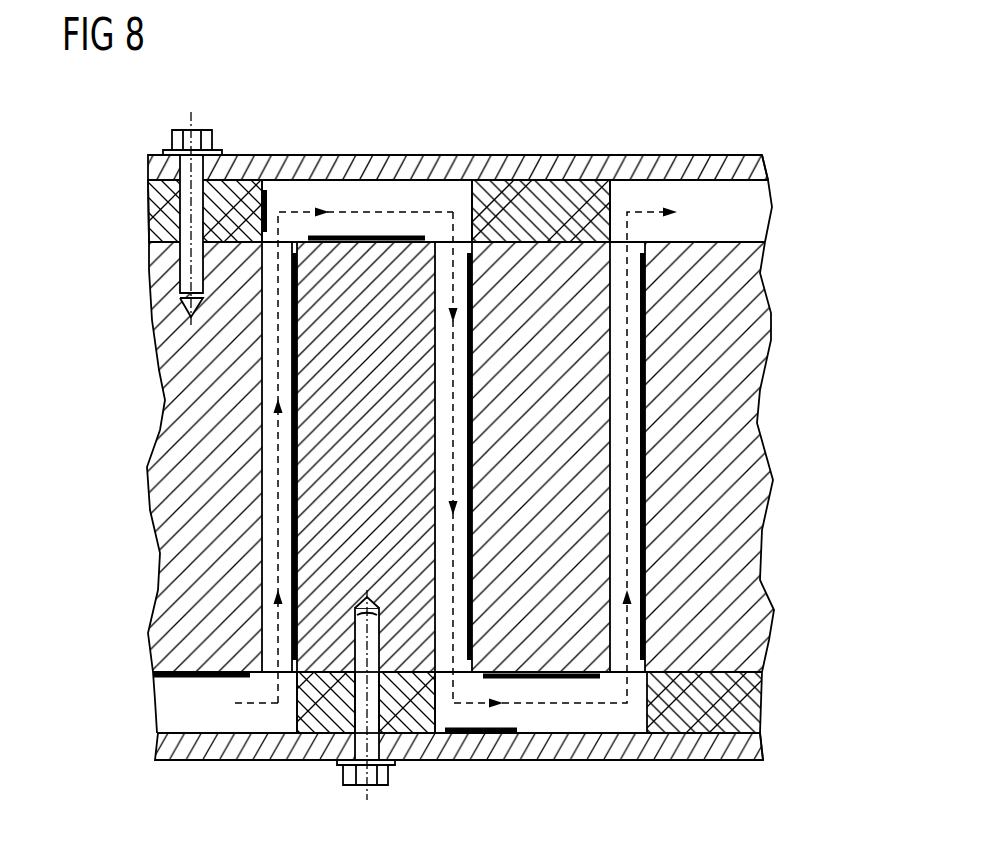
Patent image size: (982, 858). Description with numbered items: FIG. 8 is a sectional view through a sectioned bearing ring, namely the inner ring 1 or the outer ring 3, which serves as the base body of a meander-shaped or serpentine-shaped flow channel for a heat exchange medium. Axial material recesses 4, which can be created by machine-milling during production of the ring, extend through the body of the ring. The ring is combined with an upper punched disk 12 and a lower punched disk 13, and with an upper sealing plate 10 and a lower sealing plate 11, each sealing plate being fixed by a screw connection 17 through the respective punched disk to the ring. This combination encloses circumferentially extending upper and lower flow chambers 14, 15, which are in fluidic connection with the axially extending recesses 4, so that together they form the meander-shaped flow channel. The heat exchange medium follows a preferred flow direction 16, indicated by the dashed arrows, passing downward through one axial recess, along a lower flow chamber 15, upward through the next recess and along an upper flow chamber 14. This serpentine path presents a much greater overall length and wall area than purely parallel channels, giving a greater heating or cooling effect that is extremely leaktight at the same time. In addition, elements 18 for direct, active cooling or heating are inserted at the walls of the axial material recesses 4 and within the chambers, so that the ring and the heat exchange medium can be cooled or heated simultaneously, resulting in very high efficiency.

The inner ring 1 is at (185, 557).
The outer ring 3 is at (457, 457).
The axial material recess 4 is at (265, 368).
The upper sealing plate 10 is at (758, 172).
The lower sealing plate 11 is at (750, 748).
The upper punched disk 12 is at (558, 203).
The lower punched disk 13 is at (735, 710).
The upper flow chamber 14 is at (378, 212).
The lower flow chamber 15 is at (202, 707).
The preferred flow direction 16 is at (268, 445).
The screw connection 17 is at (185, 212).
The element for direct cooling or heating 18 is at (362, 241).